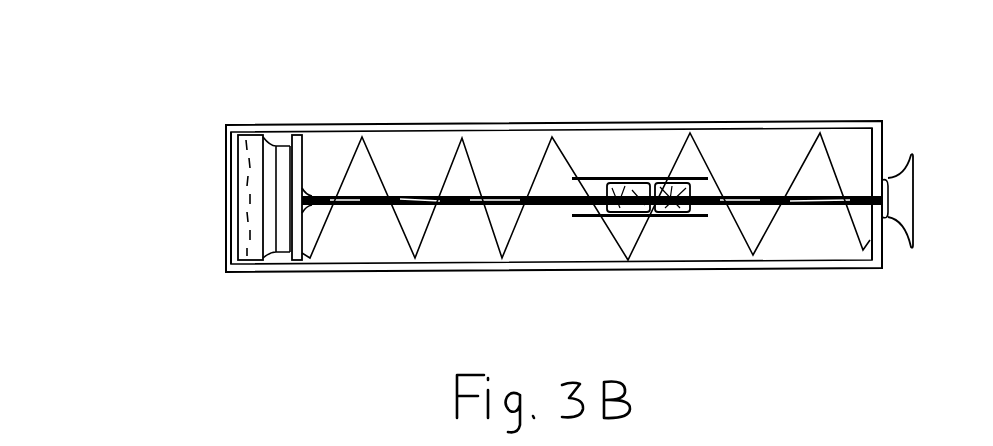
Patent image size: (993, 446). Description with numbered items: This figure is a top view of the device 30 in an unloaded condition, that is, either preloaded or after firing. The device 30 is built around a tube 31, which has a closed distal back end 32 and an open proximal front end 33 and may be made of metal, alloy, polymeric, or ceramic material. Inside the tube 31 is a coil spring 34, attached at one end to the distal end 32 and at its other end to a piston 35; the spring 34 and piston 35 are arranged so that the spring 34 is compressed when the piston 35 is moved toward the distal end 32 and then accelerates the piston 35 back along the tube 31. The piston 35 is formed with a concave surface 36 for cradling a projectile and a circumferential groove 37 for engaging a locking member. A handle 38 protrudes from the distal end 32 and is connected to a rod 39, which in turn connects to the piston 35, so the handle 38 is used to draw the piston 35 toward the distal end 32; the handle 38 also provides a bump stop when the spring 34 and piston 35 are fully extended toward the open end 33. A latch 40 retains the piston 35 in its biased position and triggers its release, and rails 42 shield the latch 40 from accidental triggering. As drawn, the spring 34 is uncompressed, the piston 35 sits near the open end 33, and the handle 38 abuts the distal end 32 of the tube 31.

The device 30 is at (590, 60).
The tube 31 is at (855, 270).
The distal end 32 is at (884, 141).
The open proximal end 33 is at (226, 182).
The coil spring 34 is at (770, 228).
The piston 35 is at (300, 153).
The concave surface 36 is at (248, 216).
The circumferential groove 37 is at (282, 145).
The handle 38 is at (920, 202).
The rod 39 is at (739, 184).
The latch 40 is at (675, 212).
The rails 42 is at (638, 176).